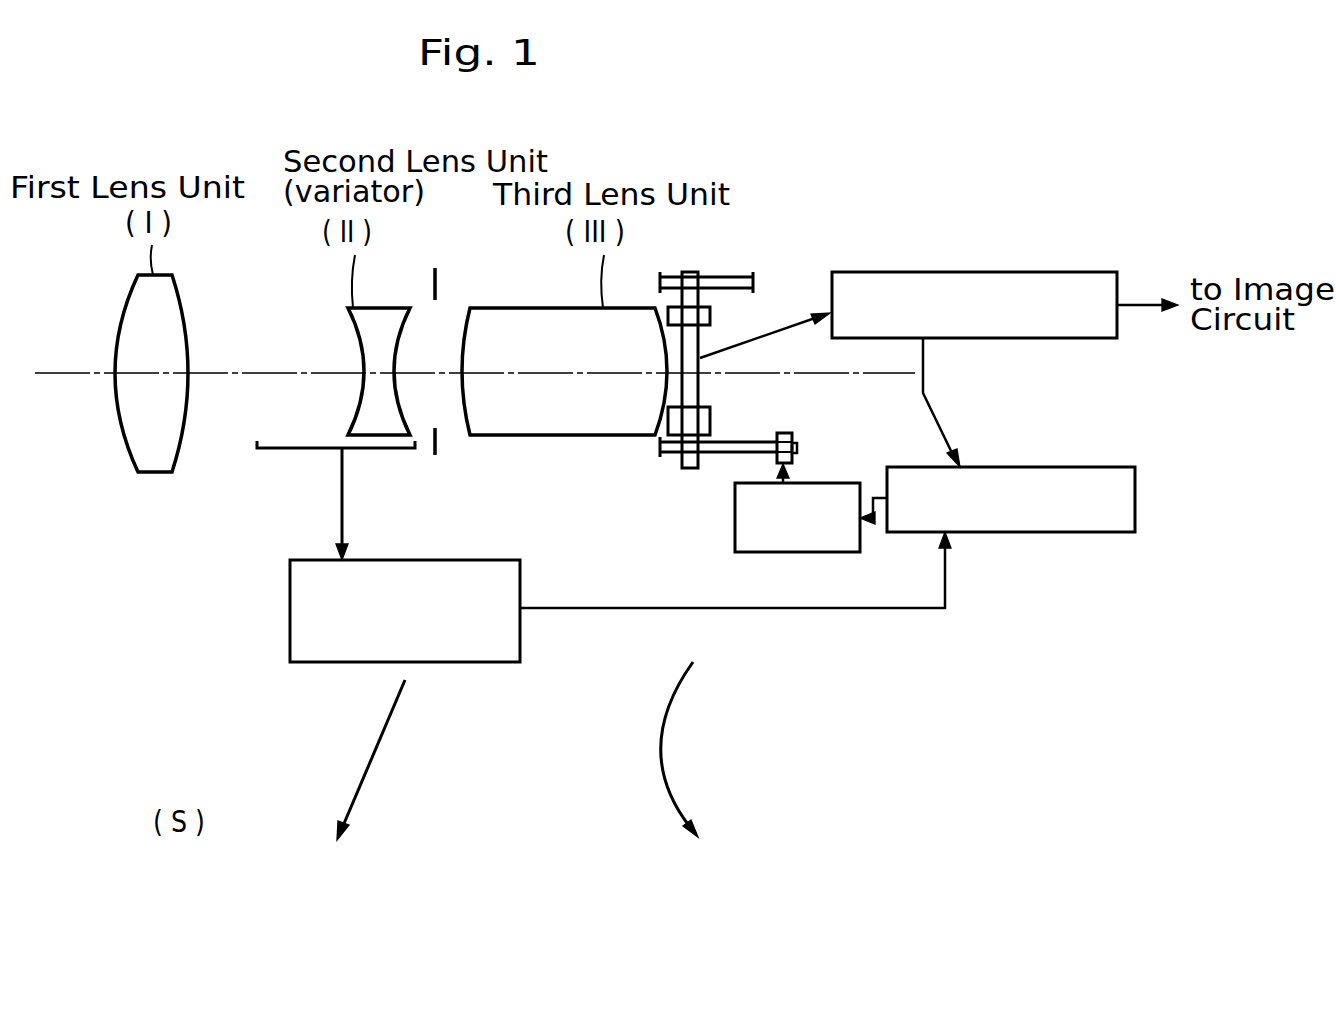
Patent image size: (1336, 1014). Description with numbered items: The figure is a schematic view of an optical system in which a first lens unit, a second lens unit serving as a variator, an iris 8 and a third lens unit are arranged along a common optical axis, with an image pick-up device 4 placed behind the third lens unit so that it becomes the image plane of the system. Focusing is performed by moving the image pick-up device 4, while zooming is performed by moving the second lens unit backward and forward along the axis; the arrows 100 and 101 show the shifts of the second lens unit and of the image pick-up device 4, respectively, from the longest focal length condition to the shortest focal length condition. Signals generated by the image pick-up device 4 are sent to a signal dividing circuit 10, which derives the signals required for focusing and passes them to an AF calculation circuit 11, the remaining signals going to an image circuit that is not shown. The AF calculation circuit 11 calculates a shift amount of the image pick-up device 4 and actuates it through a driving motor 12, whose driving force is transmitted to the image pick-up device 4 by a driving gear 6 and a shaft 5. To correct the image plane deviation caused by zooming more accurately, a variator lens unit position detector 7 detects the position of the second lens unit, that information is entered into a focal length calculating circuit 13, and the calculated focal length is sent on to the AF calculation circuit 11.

The image pick-up device 4 is at (700, 348).
The shaft 5 is at (737, 455).
The driving gear 6 is at (777, 432).
The variator lens unit position detector 7 is at (263, 452).
The iris 8 is at (436, 444).
The signal dividing circuit 10 is at (925, 272).
The AF calculation circuit 11 is at (1137, 498).
The driving motor 12 is at (815, 483).
The focal length calculating circuit 13 is at (360, 663).
The arrow 100 is at (368, 775).
The arrow 101 is at (672, 782).